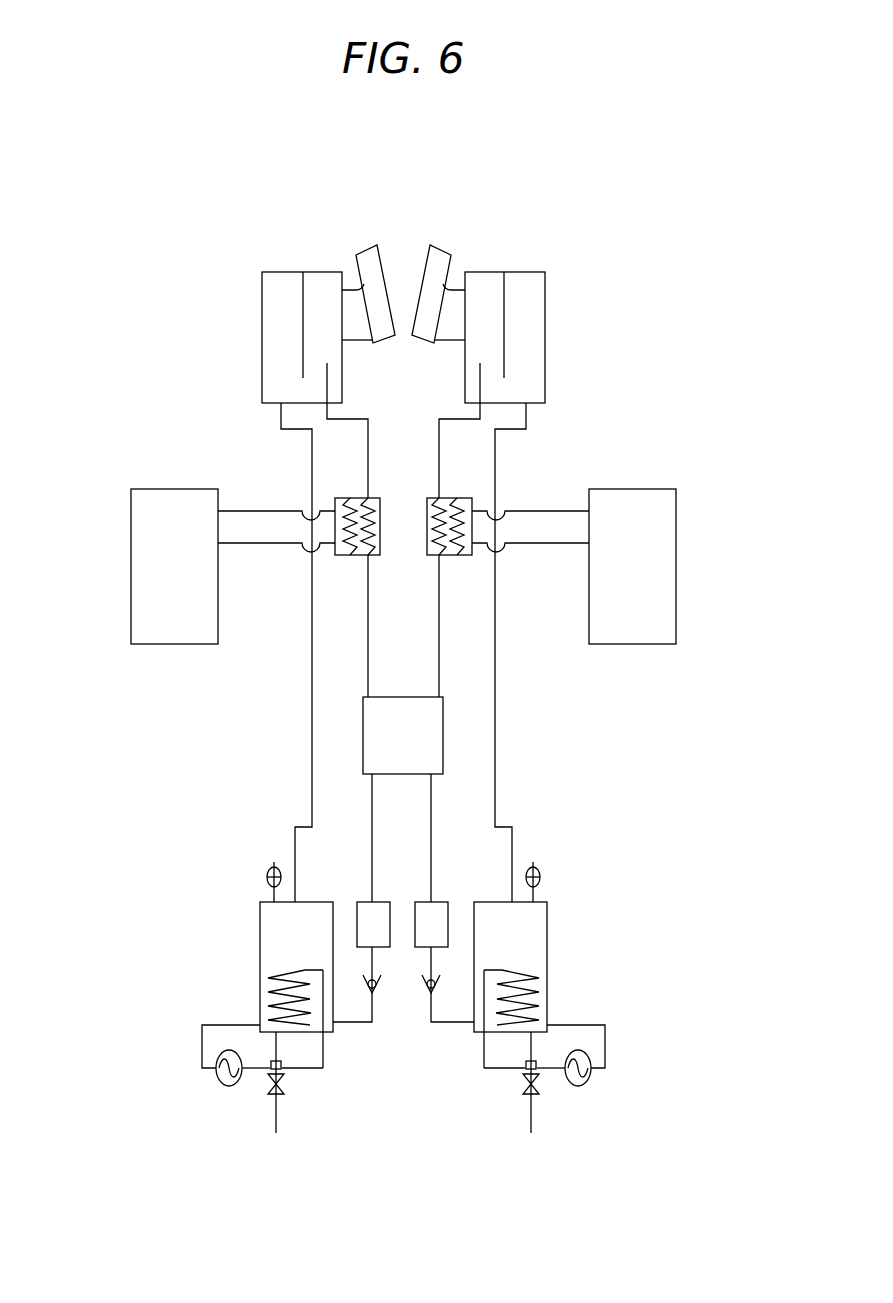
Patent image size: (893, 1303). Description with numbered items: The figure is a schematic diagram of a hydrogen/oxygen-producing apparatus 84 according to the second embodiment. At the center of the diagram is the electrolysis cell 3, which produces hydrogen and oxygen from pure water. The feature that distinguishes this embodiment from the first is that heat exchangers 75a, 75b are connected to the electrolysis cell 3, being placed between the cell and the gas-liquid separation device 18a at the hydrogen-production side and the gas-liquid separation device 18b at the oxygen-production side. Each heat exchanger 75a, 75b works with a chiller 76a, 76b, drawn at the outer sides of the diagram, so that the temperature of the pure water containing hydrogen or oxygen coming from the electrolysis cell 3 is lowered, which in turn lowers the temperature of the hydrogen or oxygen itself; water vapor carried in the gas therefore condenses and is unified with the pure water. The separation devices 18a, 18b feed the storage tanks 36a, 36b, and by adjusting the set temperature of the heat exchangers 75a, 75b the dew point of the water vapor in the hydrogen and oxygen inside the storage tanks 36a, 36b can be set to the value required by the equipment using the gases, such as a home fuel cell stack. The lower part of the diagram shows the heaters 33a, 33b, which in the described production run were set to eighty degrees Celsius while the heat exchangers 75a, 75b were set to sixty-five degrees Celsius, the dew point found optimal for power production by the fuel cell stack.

The hydrogen/oxygen-producing apparatus 84 is at (97, 194).
The gas-liquid separation device 18a is at (546, 318).
The gas-liquid separation device 18b is at (262, 320).
The storage tank 36a is at (437, 244).
The storage tank 36b is at (368, 282).
The heat exchanger 75a is at (457, 532).
The heat exchanger 75b is at (350, 532).
The chiller 76a is at (626, 532).
The chiller 76b is at (186, 532).
The electrolysis cell 3 is at (420, 730).
The heater 33a is at (521, 978).
The heater 33b is at (282, 978).